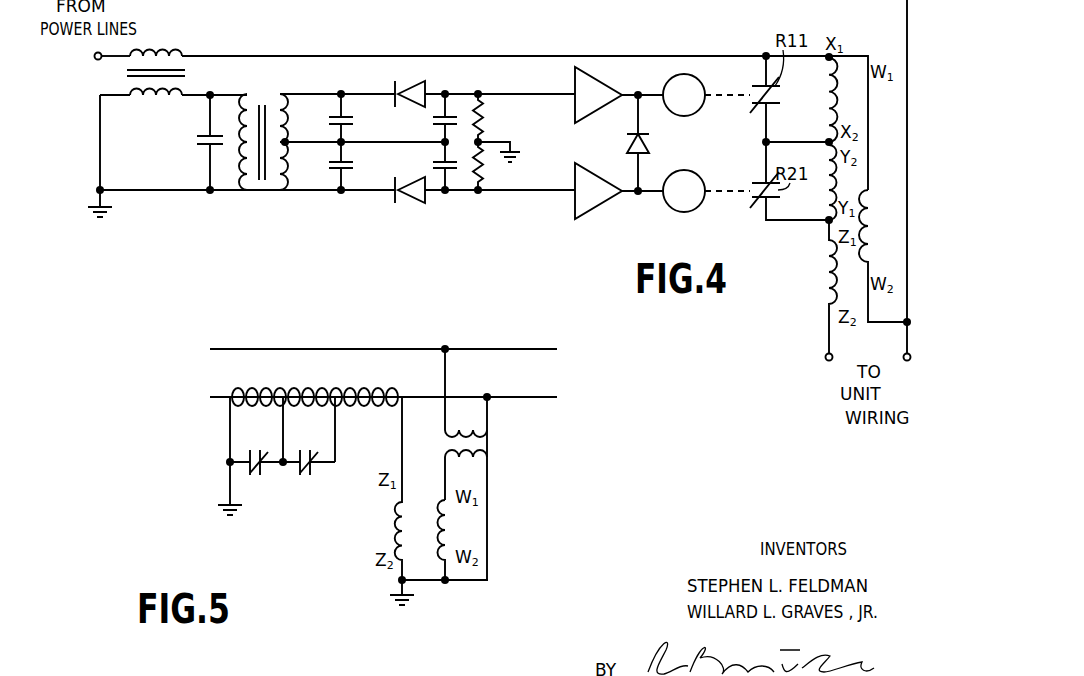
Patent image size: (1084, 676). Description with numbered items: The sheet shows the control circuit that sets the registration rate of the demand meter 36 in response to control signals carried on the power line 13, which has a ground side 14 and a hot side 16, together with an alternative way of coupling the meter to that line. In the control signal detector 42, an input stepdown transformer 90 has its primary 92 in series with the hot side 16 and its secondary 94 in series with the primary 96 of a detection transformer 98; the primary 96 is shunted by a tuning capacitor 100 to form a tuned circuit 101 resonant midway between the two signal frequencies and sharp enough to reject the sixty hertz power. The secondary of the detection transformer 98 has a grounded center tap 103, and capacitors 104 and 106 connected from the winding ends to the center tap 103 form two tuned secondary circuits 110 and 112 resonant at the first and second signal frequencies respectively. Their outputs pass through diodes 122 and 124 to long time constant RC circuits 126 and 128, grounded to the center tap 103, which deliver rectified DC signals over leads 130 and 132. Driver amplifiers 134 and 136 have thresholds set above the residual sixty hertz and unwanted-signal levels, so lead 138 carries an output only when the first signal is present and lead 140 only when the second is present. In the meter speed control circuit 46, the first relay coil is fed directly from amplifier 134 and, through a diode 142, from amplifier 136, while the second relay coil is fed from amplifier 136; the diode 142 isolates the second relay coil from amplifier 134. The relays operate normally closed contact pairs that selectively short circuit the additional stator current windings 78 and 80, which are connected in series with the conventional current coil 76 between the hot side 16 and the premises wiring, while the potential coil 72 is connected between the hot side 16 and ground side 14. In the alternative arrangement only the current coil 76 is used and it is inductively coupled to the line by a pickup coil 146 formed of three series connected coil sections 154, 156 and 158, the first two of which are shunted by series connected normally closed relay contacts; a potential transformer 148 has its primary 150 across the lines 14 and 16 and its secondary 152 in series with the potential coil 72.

In FIG. 4, the power line 13 is at (423, 23).
In FIG. 5, the power line 13 is at (305, 356).
In FIG. 5, the ground side 14 is at (212, 348).
In FIG. 4, the hot side 16 is at (300, 56).
In FIG. 5, the hot side 16 is at (212, 396).
In FIG. 4, the demand meter 36 is at (894, 180).
In FIG. 4, the control signal detector 42 is at (291, 211).
In FIG. 4, the meter speed control circuit 46 is at (706, 143).
In FIG. 4, the potential coil 72 is at (870, 236).
In FIG. 5, the potential coil 72 is at (452, 546).
In FIG. 4, the current coil 76 is at (822, 275).
In FIG. 5, the current coil 76 is at (396, 520).
In FIG. 4, the additional current winding 78 is at (826, 108).
In FIG. 4, the additional current winding 80 is at (823, 175).
In FIG. 4, the input stepdown transformer 90 is at (196, 74).
In FIG. 4, the primary 92 is at (170, 51).
In FIG. 4, the secondary 94 is at (144, 101).
In FIG. 4, the primary 96 is at (238, 165).
In FIG. 4, the detection transformer 98 is at (260, 94).
In FIG. 4, the tuning capacitor 100 is at (203, 150).
In FIG. 4, the tuned circuit 101 is at (221, 165).
In FIG. 4, the center tap 103 is at (325, 138).
In FIG. 4, the capacitor 104 is at (347, 122).
In FIG. 4, the capacitor 106 is at (352, 166).
In FIG. 4, the tuned secondary circuit 110 is at (305, 100).
In FIG. 4, the tuned secondary circuit 112 is at (299, 174).
In FIG. 4, the diode 122 is at (400, 83).
In FIG. 4, the diode 124 is at (414, 202).
In FIG. 4, the long time constant RC circuit 126 is at (486, 118).
In FIG. 4, the long time constant RC circuit 128 is at (486, 172).
In FIG. 4, the lead 130 is at (527, 93).
In FIG. 4, the lead 132 is at (528, 196).
In FIG. 4, the driver amplifier 134 is at (590, 66).
In FIG. 4, the driver amplifier 136 is at (588, 220).
In FIG. 4, the lead 138 is at (636, 92).
In FIG. 4, the lead 140 is at (628, 196).
In FIG. 4, the diode 142 is at (626, 146).
In FIG. 5, the pickup coil 146 is at (350, 388).
In FIG. 5, the potential transformer 148 is at (500, 447).
In FIG. 5, the primary 150 is at (490, 433).
In FIG. 5, the secondary 152 is at (488, 458).
In FIG. 5, the pickup coil section 154 is at (250, 406).
In FIG. 5, the pickup coil section 156 is at (312, 406).
In FIG. 5, the pickup coil section 158 is at (380, 406).